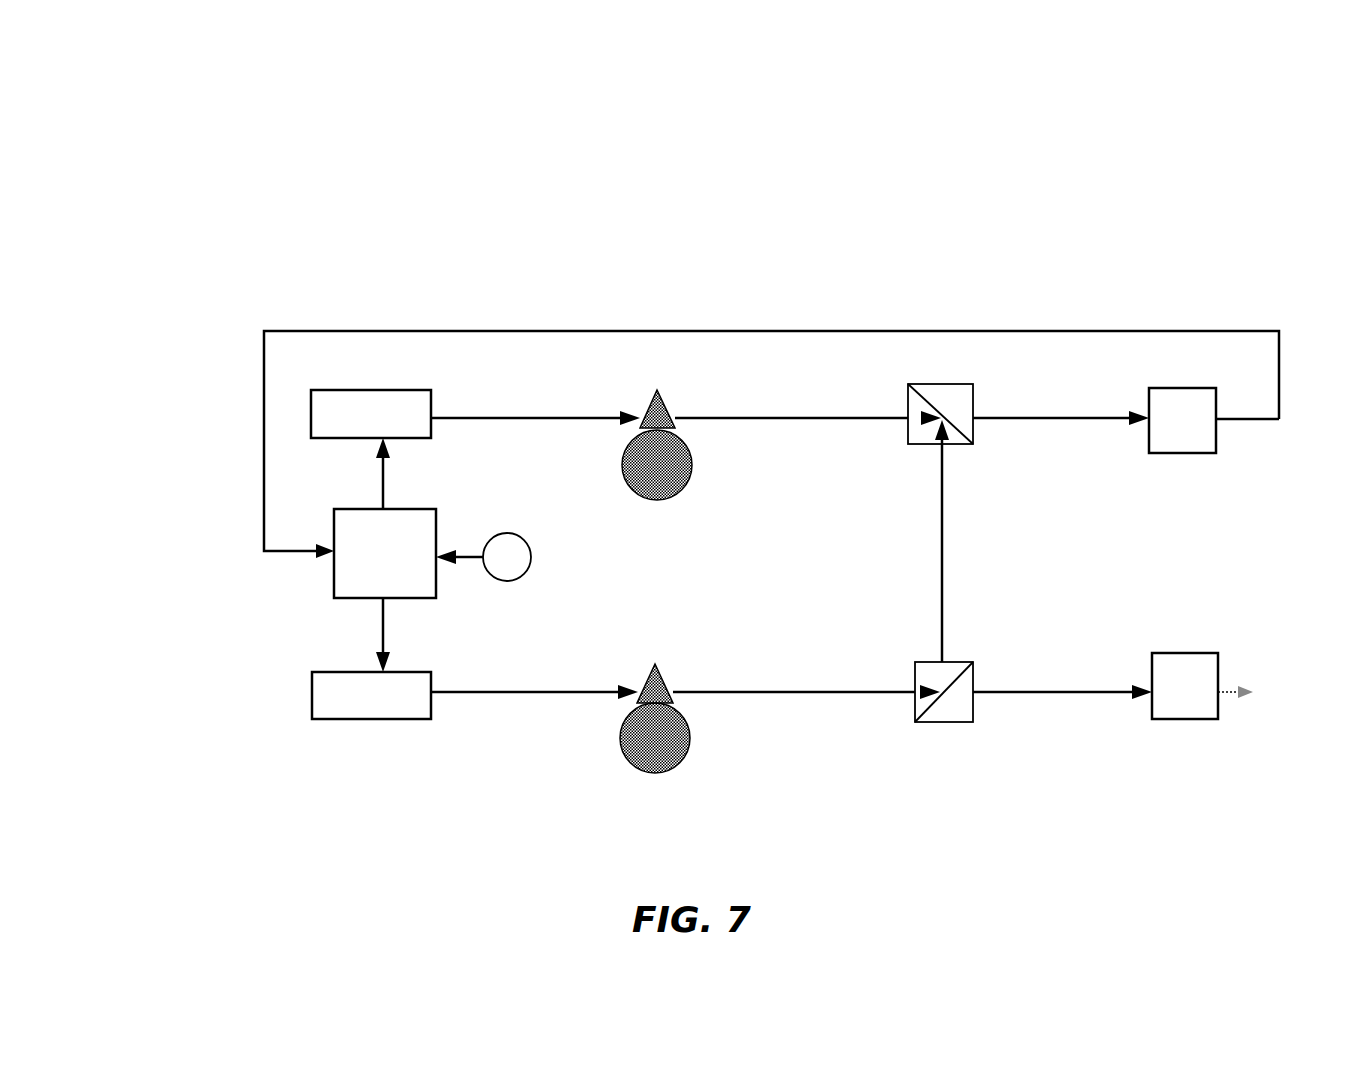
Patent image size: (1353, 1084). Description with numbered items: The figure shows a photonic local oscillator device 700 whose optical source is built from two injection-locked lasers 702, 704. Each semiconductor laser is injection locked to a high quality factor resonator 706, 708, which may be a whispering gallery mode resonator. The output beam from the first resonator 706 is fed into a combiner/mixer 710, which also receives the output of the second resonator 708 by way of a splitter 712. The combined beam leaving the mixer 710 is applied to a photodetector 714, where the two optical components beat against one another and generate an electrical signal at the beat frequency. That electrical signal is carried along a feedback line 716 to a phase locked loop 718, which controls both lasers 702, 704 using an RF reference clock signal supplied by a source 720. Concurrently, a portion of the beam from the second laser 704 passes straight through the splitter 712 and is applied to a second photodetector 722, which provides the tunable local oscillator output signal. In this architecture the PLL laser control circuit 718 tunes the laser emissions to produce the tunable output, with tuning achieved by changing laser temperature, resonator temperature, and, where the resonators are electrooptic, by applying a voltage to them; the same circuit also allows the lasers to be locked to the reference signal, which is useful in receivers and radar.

The optical frequency synthesizer system 700 is at (134, 126).
The injection-locked laser 702 is at (400, 439).
The injection-locked laser 704 is at (358, 720).
The high quality factor resonator 706 is at (668, 500).
The high quality factor resonator 708 is at (690, 745).
The combiner/mixer 710 is at (965, 445).
The splitter 712 is at (955, 723).
The PD 714 is at (1196, 454).
The feedback line 716 is at (1004, 331).
The phase locked loop 718 is at (398, 600).
The source 720 is at (528, 573).
The second PD 722 is at (1183, 720).